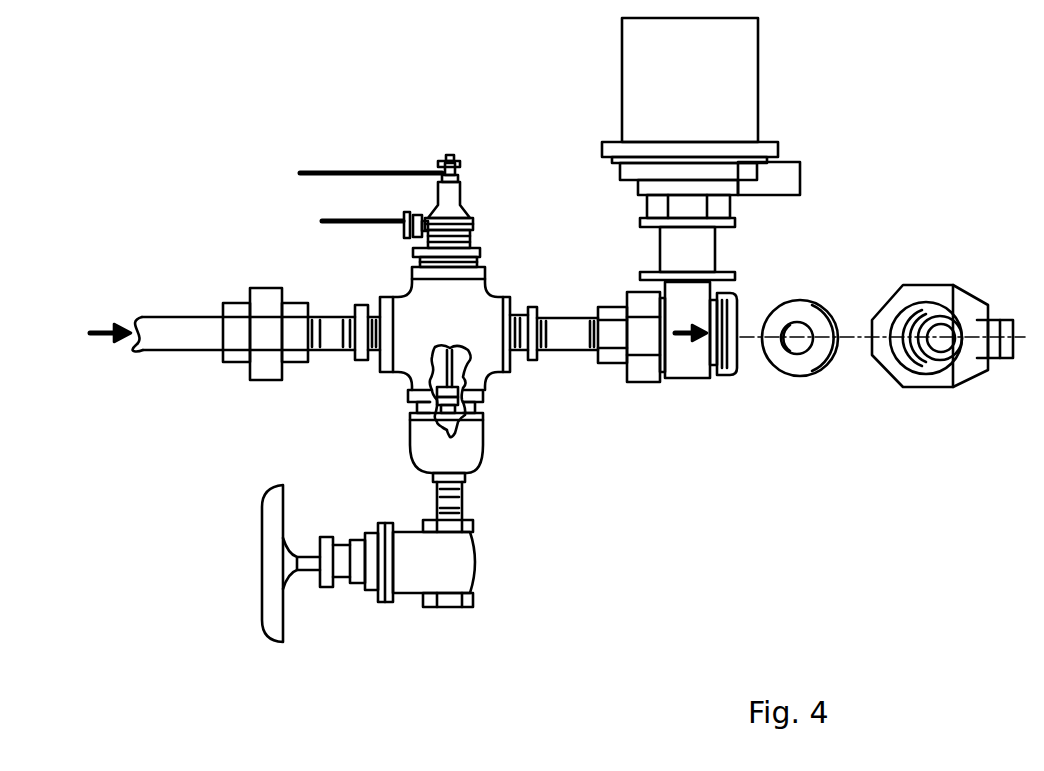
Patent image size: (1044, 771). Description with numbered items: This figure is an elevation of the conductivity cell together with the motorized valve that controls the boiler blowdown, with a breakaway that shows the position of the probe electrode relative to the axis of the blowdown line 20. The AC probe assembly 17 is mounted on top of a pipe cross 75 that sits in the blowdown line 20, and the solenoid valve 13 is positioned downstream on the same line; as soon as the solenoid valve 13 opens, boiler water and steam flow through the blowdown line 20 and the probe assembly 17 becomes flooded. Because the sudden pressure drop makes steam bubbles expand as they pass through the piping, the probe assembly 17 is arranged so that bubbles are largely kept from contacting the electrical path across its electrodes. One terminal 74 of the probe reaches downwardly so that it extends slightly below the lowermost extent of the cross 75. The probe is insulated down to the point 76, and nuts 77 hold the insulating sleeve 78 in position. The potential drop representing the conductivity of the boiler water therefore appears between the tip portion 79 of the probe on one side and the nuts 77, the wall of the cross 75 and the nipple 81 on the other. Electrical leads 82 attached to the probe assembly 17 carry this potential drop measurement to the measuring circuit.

The solenoid valve 13 is at (695, 248).
The AC probe assembly 17 is at (450, 200).
The blowdown line 20 is at (187, 320).
The terminal 74 is at (440, 412).
The cross 75 is at (465, 303).
The point 76 is at (460, 381).
The nuts 77 is at (475, 412).
The insulating sleeve 78 is at (448, 370).
The tip portion 79 is at (452, 420).
The nipple 81 is at (417, 405).
The electrical leads 82 is at (337, 214).